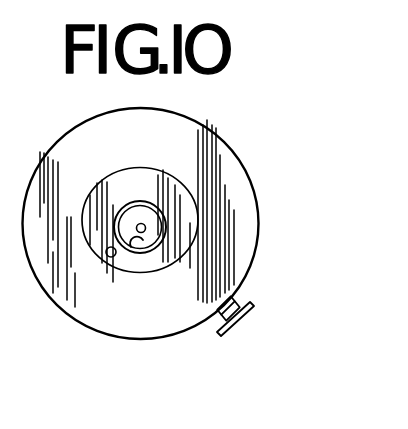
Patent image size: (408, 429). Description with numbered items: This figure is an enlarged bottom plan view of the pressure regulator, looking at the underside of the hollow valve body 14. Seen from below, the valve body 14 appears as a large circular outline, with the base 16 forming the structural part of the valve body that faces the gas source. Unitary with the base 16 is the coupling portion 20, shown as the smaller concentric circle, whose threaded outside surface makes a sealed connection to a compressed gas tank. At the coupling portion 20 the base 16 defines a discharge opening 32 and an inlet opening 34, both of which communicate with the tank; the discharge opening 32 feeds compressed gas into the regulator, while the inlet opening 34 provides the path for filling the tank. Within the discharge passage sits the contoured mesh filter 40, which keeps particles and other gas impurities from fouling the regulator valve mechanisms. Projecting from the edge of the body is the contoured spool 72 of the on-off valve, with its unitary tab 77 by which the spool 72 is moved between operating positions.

The valve body 14 is at (52, 149).
The base 16 is at (216, 175).
The coupling portion 20 is at (142, 192).
The discharge opening 32 is at (143, 242).
The inlet opening 34 is at (108, 253).
The contoured mesh filter 40 is at (157, 228).
The spool 72 is at (232, 298).
The tab 77 is at (243, 320).